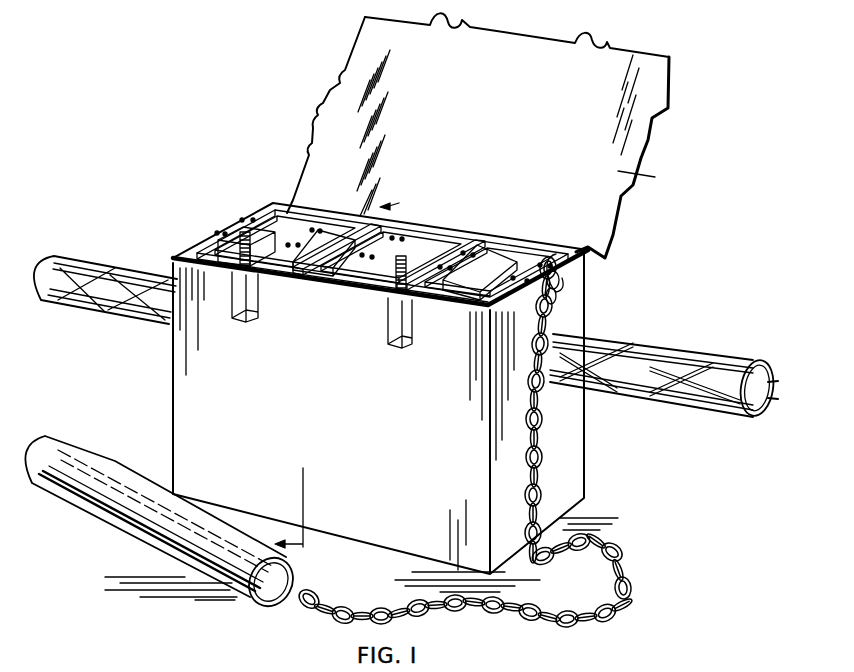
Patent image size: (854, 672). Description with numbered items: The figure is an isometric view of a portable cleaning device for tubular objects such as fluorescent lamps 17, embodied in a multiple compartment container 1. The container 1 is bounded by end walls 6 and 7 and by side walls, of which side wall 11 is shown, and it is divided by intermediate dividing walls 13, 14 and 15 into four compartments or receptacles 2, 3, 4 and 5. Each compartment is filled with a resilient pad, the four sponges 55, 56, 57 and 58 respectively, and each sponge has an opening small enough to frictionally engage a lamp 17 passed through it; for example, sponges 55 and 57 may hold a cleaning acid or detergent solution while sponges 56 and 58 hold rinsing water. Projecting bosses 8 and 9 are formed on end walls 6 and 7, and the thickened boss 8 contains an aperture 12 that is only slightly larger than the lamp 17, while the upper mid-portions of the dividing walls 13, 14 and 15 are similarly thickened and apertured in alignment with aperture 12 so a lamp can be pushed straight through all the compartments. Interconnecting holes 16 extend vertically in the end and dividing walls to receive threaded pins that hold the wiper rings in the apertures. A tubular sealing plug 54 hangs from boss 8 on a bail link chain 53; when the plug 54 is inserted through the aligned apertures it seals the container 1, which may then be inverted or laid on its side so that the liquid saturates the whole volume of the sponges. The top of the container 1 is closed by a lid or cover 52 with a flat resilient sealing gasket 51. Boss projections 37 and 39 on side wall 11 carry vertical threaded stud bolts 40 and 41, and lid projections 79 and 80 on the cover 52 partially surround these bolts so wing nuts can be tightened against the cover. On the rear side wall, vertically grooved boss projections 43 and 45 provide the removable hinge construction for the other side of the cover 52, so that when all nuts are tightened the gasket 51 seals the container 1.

The multiple compartment container 1 is at (200, 390).
The compartment 2 is at (627, 265).
The compartment 3 is at (562, 289).
The compartment 4 is at (357, 213).
The compartment 5 is at (290, 205).
The end wall 6 is at (606, 237).
The end wall 7 is at (203, 248).
The projecting boss 8 is at (560, 295).
The projecting boss 9 is at (220, 225).
The side wall 11 is at (386, 538).
The aperture 12 is at (560, 330).
The dividing wall 13 is at (490, 240).
The dividing wall 14 is at (413, 232).
The dividing wall 15 is at (266, 200).
The interconnecting holes 16 is at (569, 273).
The fluorescent lamp 17 is at (692, 357).
The boss projection 37 is at (395, 335).
The boss projection 39 is at (240, 322).
The threaded stud bolt 40 is at (397, 300).
The threaded stud bolt 41 is at (250, 274).
The vertically grooved boss projection 43 is at (580, 248).
The vertically grooved boss projection 45 is at (318, 226).
The sealing gasket 51 is at (651, 178).
The lid or cover 52 is at (630, 196).
The bail link chain 53 is at (305, 590).
The tubular sealing plug 54 is at (82, 448).
The sponge 55 is at (462, 290).
The sponge 56 is at (372, 286).
The sponge 57 is at (325, 265).
The sponge 58 is at (240, 262).
The lid projection 79 is at (605, 44).
The lid projection 80 is at (460, 22).